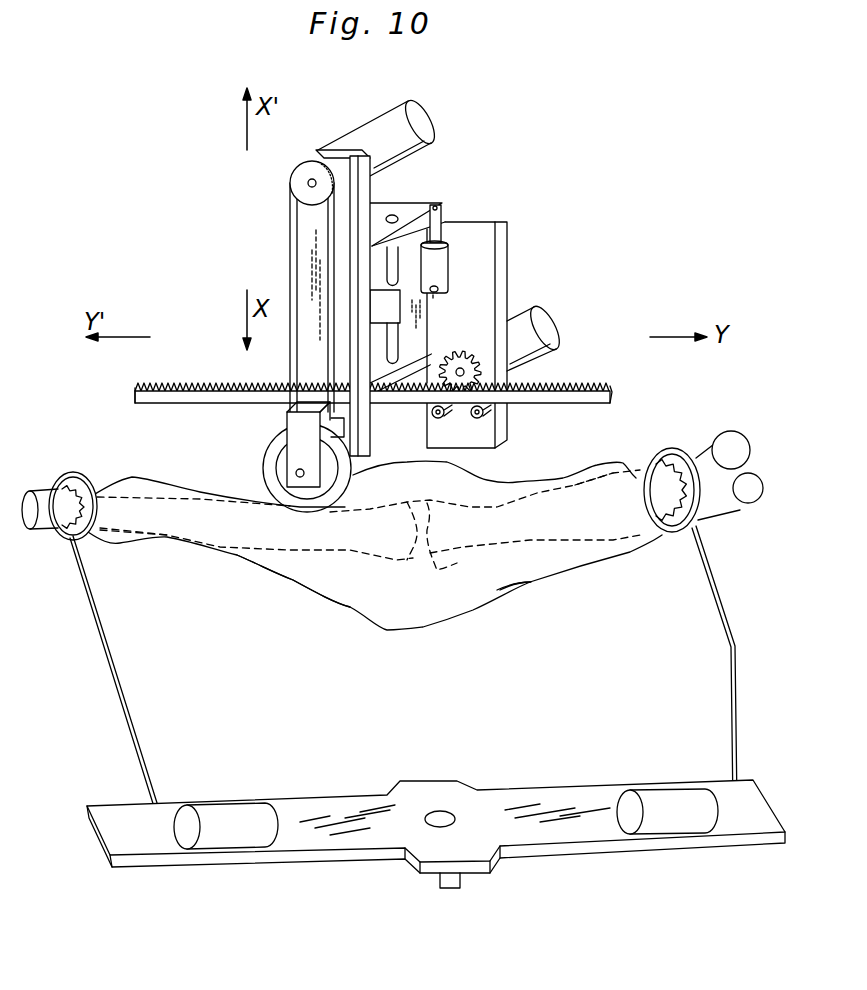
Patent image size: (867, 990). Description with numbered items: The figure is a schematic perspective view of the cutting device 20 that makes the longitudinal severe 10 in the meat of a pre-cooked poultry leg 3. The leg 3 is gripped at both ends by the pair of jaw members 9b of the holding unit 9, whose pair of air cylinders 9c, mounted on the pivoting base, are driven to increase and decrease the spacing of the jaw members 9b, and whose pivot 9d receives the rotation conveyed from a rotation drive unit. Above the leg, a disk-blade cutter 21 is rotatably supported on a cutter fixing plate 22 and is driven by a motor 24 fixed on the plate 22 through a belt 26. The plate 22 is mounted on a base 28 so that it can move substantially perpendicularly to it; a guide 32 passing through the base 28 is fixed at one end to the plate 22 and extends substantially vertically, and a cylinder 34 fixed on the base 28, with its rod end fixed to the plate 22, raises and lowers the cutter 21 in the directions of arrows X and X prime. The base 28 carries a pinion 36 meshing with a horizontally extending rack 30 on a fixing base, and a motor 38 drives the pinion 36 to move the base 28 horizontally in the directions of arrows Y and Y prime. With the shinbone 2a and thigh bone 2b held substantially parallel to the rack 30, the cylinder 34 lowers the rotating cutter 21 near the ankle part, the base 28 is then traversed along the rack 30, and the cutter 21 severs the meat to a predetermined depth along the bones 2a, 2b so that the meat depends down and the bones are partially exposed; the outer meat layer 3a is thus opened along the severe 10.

The cutting device 20 is at (558, 194).
The motor 24 is at (380, 132).
The cutter fixing plate 22 is at (392, 212).
The belt 26 is at (290, 240).
The cylinder 34 is at (440, 256).
The guide 32 is at (393, 337).
The base 28 is at (502, 302).
The motor 38 is at (550, 323).
The pinion 36 is at (478, 372).
The rack 30 is at (588, 386).
The disk-blade cutter 21 is at (274, 452).
The severe 10 is at (237, 500).
The shinbone 2a is at (150, 512).
The outer layer 3a is at (303, 565).
The poultry leg 3 is at (542, 585).
The thigh bone 2b is at (615, 513).
The jaw members 9b is at (68, 538).
The holding unit 9 is at (356, 815).
The pivot 9d is at (442, 815).
The air cylinders 9c is at (235, 842).